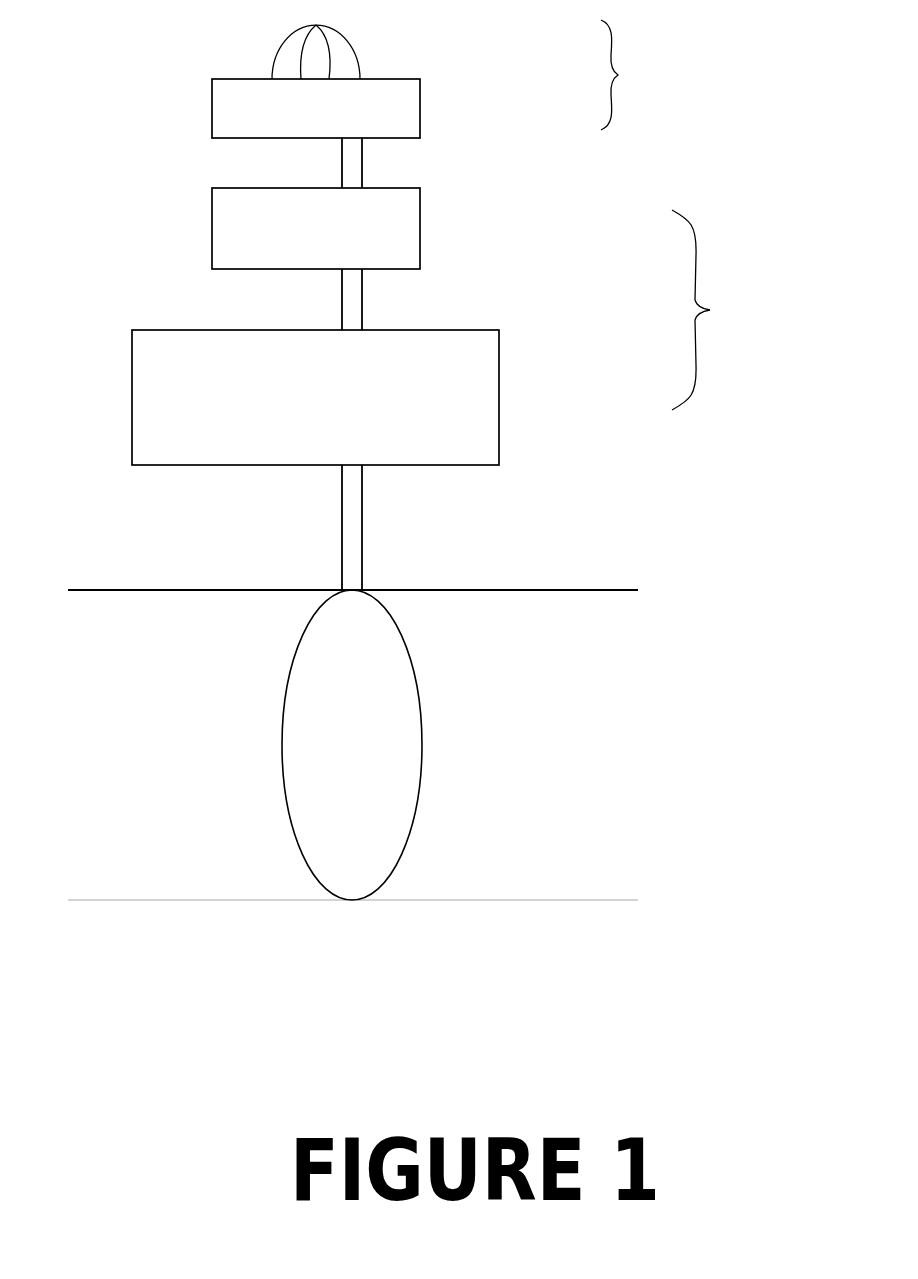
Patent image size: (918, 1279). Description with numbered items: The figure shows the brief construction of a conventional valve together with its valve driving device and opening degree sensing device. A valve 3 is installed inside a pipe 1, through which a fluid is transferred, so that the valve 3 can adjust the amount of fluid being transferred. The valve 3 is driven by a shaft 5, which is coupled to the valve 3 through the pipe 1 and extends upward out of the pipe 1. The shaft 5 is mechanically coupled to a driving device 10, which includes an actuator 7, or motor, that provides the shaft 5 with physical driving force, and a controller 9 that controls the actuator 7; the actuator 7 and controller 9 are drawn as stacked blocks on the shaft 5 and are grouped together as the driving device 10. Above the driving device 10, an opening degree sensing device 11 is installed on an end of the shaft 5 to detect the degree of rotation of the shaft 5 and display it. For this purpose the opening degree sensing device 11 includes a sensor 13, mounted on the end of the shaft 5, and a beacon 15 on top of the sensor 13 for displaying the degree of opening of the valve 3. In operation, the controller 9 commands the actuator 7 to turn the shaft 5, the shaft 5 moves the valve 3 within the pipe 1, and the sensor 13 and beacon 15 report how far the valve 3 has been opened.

The pipe 1 is at (430, 902).
The valve 3 is at (422, 745).
The shaft 5 is at (362, 528).
The actuator 7 is at (499, 397).
The controller 9 is at (420, 228).
The driving device 10 is at (715, 310).
The opening degree sensing device 11 is at (634, 75).
The sensor 13 is at (420, 107).
The beacon 15 is at (355, 48).